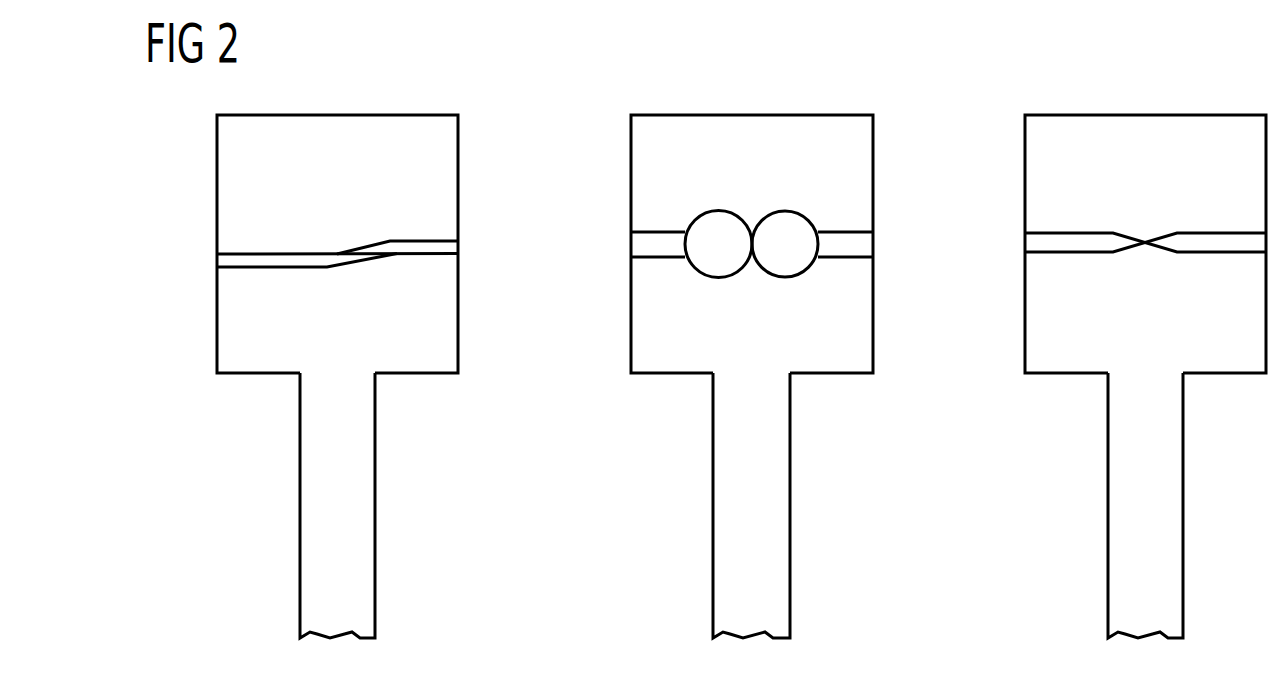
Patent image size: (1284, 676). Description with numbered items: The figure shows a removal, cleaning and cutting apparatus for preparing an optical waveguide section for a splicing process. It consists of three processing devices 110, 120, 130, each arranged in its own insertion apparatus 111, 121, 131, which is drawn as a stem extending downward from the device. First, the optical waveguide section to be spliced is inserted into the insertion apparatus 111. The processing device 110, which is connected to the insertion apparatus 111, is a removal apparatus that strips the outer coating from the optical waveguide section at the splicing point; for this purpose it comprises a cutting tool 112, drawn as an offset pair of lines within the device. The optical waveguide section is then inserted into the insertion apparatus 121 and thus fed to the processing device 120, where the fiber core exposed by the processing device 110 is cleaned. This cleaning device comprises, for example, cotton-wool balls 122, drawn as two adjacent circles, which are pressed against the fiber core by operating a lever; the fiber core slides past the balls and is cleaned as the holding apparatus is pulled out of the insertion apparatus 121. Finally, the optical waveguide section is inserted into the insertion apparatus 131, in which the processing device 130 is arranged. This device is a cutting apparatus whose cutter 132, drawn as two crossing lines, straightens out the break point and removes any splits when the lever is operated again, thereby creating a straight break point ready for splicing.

The processing device 110 is at (300, 376).
The insertion apparatus 111 is at (325, 532).
The cutting tool 112 is at (337, 252).
The processing device 120 is at (715, 376).
The insertion apparatus 121 is at (736, 534).
The cotton-wool balls 122 is at (793, 230).
The processing device 130 is at (1111, 376).
The insertion apparatus 131 is at (1133, 534).
The cutter 132 is at (1163, 232).